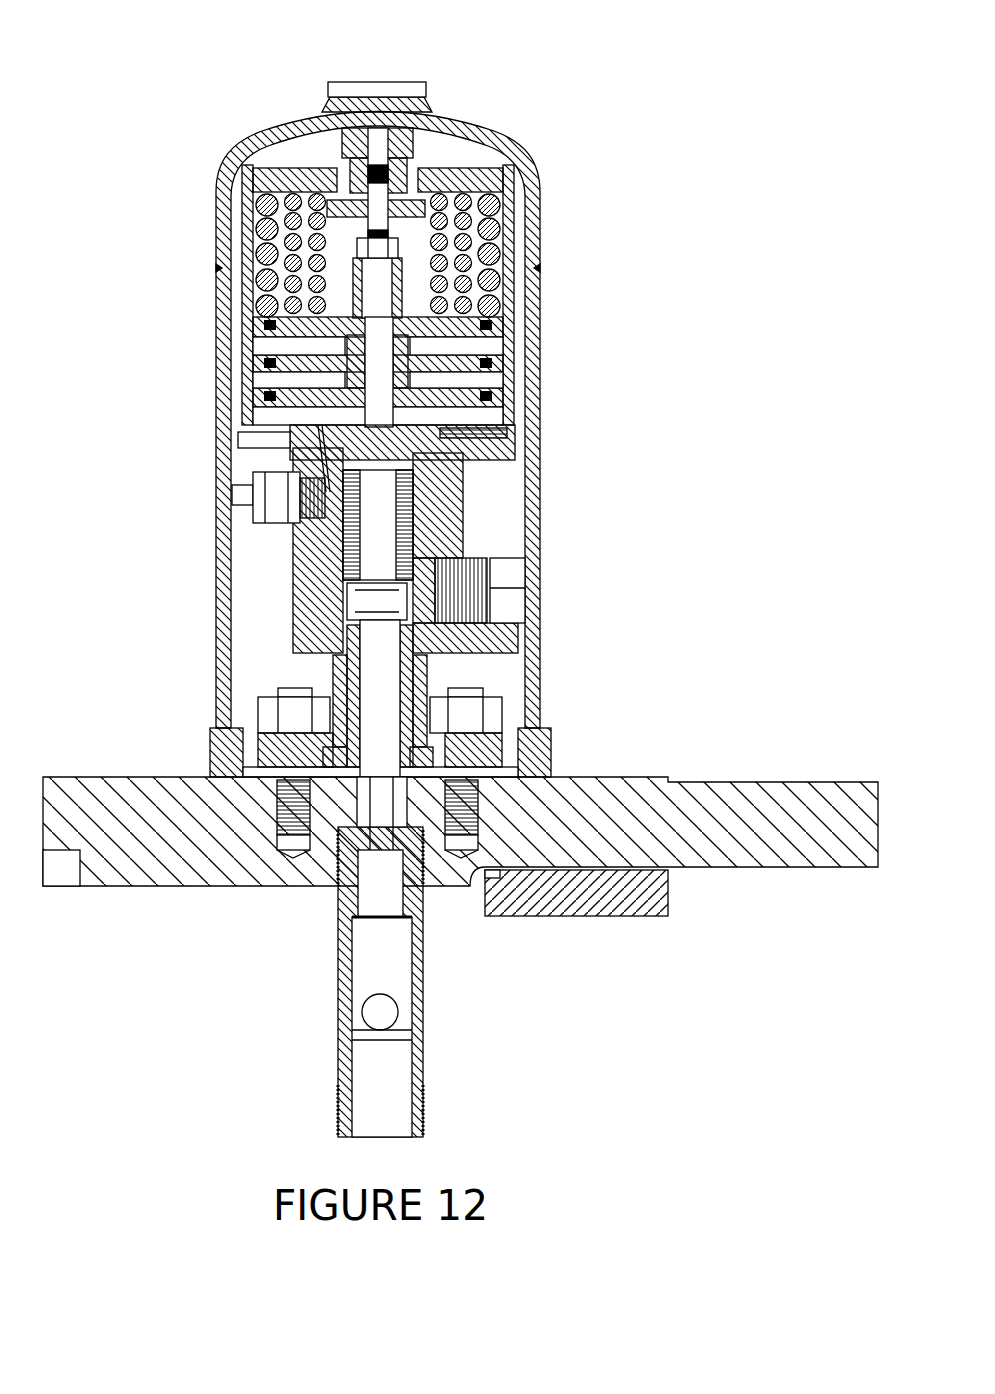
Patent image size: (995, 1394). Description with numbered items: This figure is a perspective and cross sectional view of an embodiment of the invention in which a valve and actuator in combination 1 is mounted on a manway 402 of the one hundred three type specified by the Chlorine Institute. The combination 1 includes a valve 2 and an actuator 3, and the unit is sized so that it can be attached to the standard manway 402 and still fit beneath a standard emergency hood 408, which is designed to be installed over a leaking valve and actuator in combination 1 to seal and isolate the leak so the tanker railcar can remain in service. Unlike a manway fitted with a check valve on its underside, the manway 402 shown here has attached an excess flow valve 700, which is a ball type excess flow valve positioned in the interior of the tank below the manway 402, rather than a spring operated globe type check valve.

The valve and actuator in combination 1 is at (460, 586).
The valve 2 is at (498, 494).
The actuator 3 is at (412, 243).
The emergency hood 408 is at (280, 122).
The manway 402 is at (748, 867).
The excess flow valve 700 is at (462, 1048).